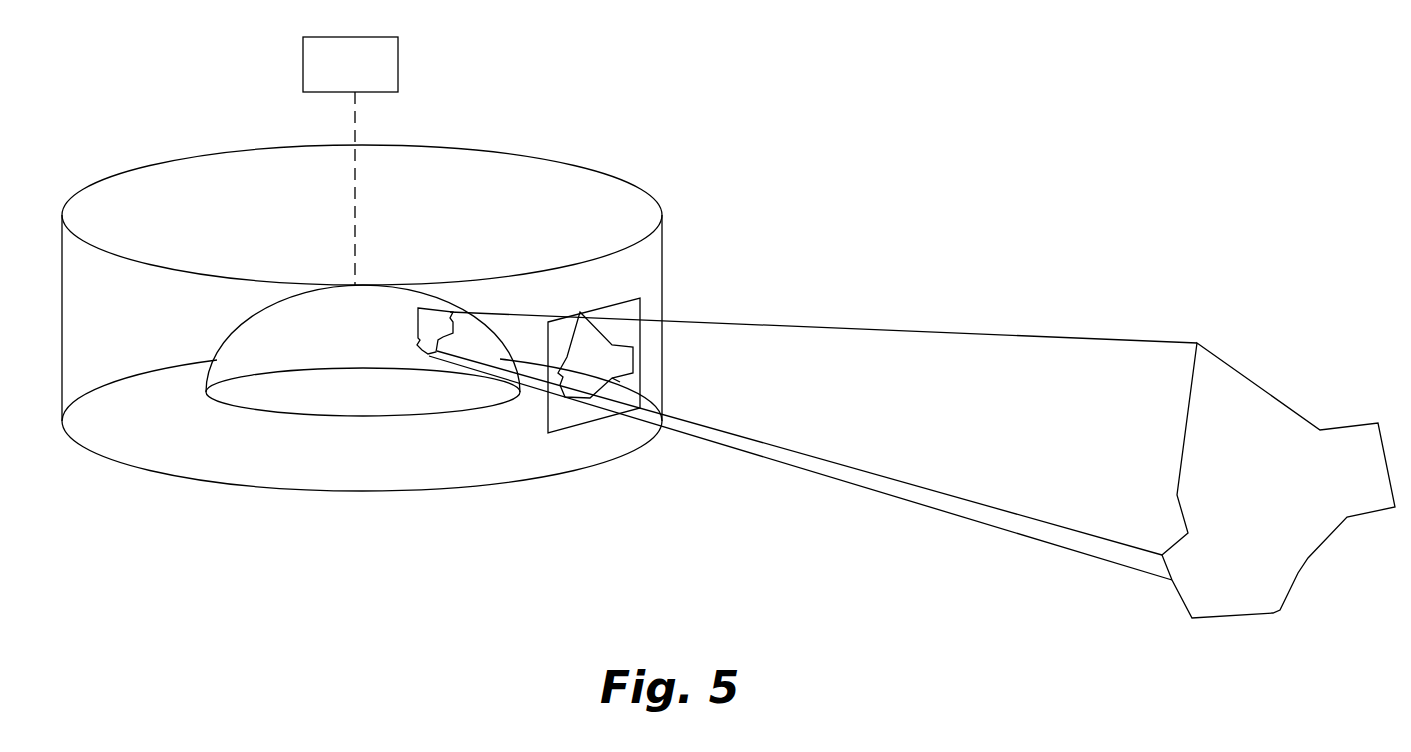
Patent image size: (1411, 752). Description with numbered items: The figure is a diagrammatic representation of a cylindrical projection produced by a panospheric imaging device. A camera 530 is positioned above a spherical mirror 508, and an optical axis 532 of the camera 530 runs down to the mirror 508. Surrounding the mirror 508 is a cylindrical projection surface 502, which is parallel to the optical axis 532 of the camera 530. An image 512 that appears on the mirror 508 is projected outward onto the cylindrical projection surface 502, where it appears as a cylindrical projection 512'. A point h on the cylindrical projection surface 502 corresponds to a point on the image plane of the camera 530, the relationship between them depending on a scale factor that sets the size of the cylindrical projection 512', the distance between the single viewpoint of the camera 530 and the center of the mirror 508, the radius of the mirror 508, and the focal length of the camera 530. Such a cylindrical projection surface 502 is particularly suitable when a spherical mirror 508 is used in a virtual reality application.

The cylindrical projection surface 502 is at (607, 174).
The spherical mirror 508 is at (376, 297).
The image 512 is at (452, 286).
The cylindrical projection 512' is at (652, 324).
The camera 530 is at (398, 70).
The optical axis 532 is at (355, 180).
The point on cylindrical projection surface h is at (620, 382).